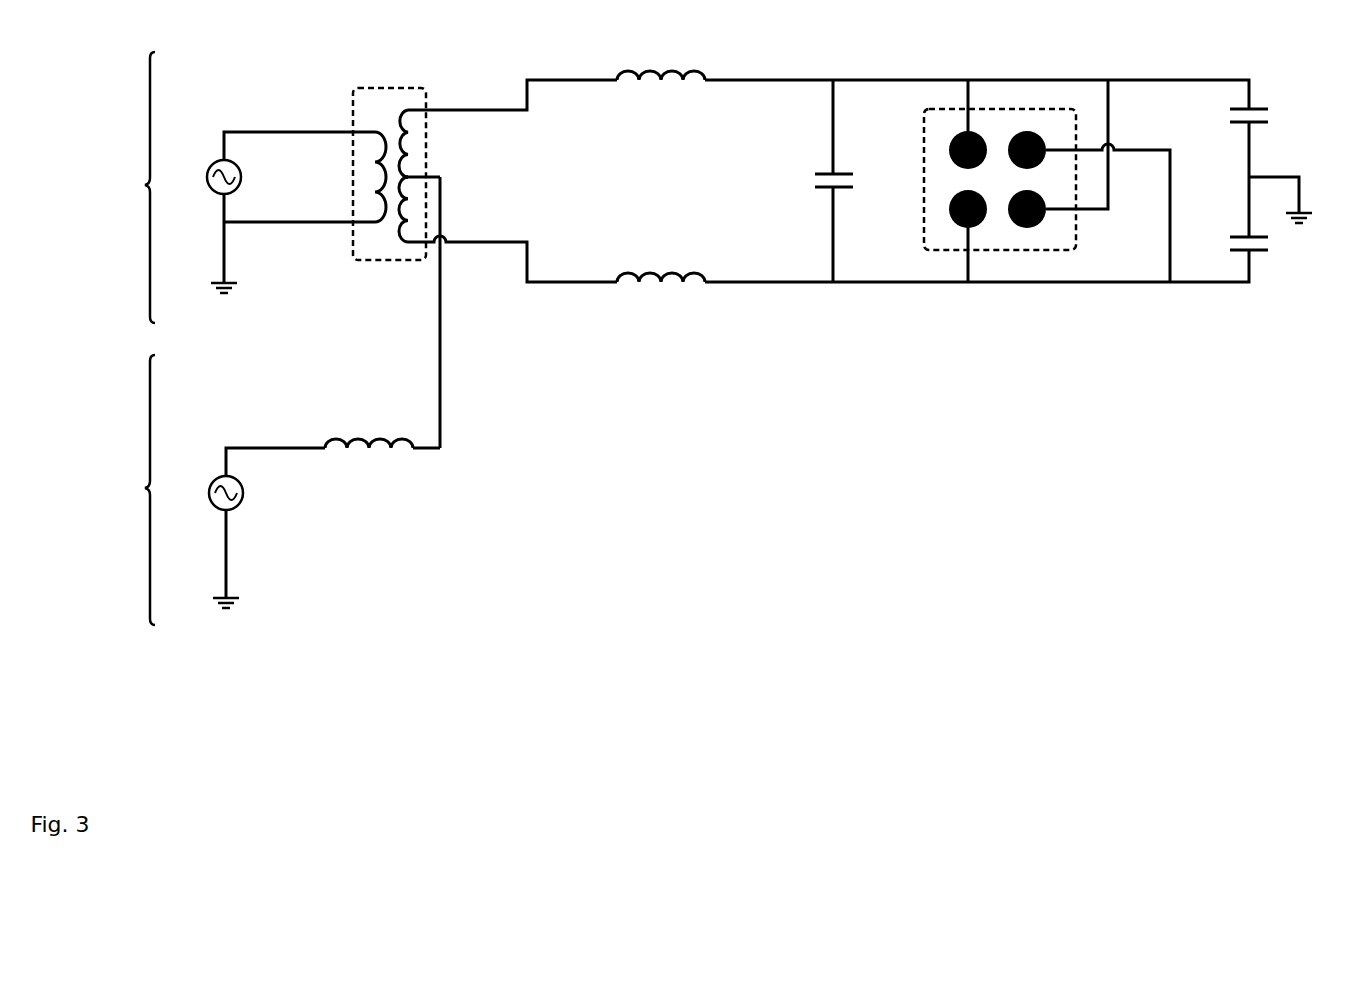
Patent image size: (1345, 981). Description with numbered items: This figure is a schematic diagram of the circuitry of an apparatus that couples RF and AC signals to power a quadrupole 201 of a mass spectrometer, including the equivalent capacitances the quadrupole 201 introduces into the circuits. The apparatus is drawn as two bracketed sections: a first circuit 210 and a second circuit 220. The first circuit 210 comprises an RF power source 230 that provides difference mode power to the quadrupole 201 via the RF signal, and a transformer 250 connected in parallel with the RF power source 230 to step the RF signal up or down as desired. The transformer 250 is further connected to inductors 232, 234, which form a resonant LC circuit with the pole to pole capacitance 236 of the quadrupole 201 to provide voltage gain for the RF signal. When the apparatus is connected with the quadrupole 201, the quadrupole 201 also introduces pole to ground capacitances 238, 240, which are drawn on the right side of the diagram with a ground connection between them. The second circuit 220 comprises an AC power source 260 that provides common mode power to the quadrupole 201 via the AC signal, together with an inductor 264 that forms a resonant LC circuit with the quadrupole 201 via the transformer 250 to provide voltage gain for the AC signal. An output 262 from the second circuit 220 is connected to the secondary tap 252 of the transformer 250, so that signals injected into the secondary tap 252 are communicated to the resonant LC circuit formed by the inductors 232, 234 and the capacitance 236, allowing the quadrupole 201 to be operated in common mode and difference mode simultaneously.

The quadrupole 201 is at (922, 142).
The first circuit 210 is at (122, 187).
The second circuit 220 is at (122, 490).
The RF power source 230 is at (212, 165).
The inductor 232 is at (672, 75).
The inductor 234 is at (675, 275).
The pole to pole capacitance 236 is at (823, 172).
The pole to ground capacitance 238 is at (1260, 109).
The pole to ground capacitance 240 is at (1262, 250).
The transformer 250 is at (379, 156).
The secondary tap 252 is at (410, 177).
The AC power source 260 is at (212, 485).
The output 262 is at (438, 418).
The inductor 264 is at (365, 445).